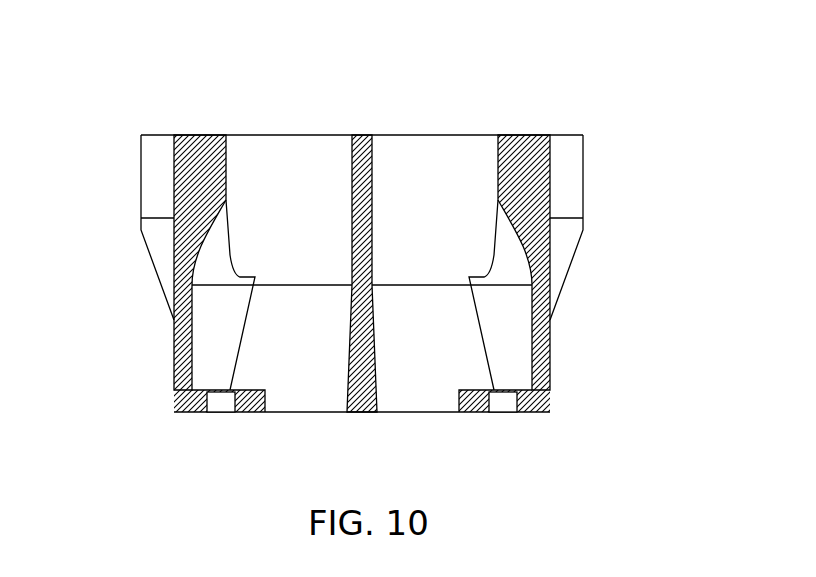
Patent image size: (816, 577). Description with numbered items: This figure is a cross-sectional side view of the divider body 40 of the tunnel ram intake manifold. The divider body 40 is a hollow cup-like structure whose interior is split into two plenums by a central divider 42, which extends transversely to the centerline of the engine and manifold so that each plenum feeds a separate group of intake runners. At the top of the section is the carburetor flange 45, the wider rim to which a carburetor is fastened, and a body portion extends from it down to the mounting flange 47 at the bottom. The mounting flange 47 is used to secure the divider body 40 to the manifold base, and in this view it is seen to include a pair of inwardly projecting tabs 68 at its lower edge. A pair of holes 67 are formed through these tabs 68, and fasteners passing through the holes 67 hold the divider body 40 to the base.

The divider body 40 is at (600, 150).
The divider 42 is at (358, 135).
The carburetor flange 45 is at (155, 135).
The mounting flange 47 is at (186, 413).
The holes 67 is at (223, 403).
The inwardly projecting tabs 68 is at (249, 408).